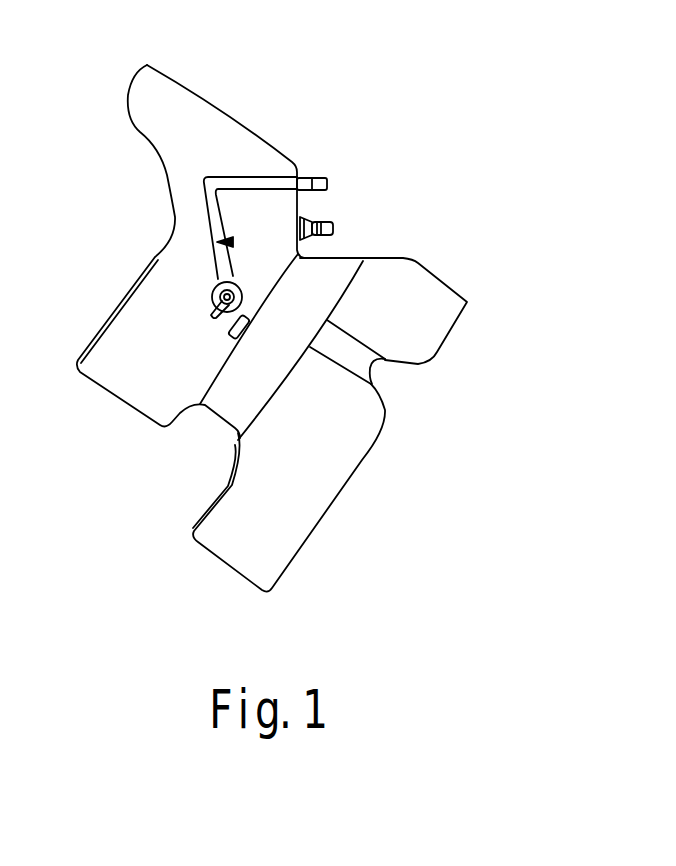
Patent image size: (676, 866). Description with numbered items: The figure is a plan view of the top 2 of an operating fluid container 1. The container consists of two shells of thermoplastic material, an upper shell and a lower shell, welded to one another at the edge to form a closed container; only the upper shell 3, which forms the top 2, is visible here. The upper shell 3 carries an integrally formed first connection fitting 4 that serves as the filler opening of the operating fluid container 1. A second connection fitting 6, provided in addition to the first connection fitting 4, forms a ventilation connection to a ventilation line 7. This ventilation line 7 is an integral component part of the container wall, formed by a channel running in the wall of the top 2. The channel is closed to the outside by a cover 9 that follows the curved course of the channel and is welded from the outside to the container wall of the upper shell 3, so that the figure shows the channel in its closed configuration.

The operating fluid container 1 is at (462, 140).
The top 2 is at (168, 308).
The upper shell 3 is at (470, 302).
The first connection fitting 4 is at (337, 224).
The second connection fitting 6 is at (321, 178).
The ventilation line 7 is at (233, 242).
The cover 9 is at (248, 177).